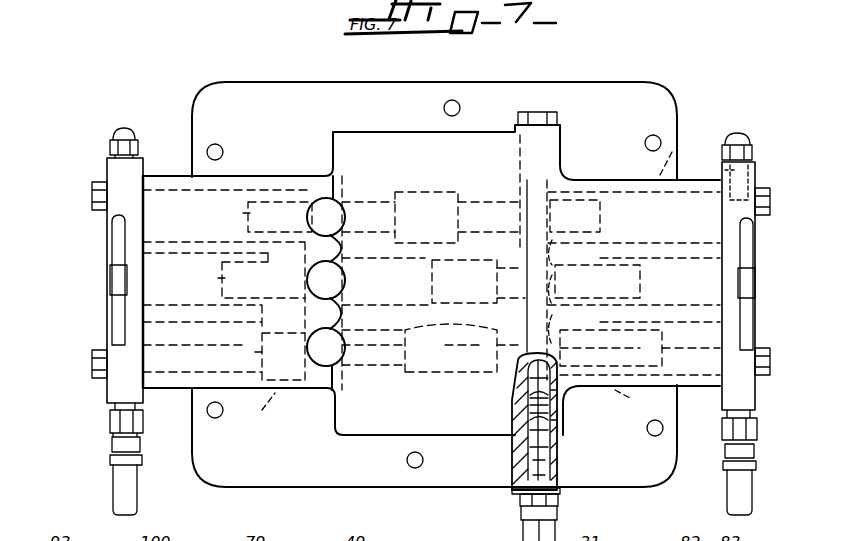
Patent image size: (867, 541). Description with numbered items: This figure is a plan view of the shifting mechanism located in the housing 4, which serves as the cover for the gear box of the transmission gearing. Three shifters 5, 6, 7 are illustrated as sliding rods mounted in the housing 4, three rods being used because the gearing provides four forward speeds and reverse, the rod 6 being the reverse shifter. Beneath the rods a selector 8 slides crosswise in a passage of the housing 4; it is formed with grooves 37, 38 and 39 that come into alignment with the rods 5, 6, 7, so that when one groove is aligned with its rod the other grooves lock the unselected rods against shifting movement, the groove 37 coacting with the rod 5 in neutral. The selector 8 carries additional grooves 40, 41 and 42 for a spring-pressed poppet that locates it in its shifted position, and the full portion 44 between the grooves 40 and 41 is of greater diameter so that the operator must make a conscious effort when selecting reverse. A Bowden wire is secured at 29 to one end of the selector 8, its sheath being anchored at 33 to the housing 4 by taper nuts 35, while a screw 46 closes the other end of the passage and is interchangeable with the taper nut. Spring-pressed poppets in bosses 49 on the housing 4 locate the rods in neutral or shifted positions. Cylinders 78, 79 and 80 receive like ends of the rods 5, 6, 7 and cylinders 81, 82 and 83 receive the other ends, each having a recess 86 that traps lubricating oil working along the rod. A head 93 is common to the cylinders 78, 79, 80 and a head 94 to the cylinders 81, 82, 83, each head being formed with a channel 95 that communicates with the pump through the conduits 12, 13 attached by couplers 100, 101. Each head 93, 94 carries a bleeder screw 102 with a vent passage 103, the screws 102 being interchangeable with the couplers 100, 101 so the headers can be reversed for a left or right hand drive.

The housing 4 is at (447, 451).
The shifter 5 is at (222, 278).
The shifter 6 is at (262, 352).
The shifter 7 is at (248, 213).
The selector 8 is at (108, 346).
The conduit 12 is at (118, 487).
The conduit 13 is at (748, 495).
The Bowden wire connection 29 is at (560, 452).
The cable anchorage 33 is at (520, 502).
The taper nuts 35 is at (560, 510).
The groove 37 is at (574, 290).
The groove 38 is at (552, 345).
The groove 39 is at (552, 236).
The groove 40 is at (520, 395).
The groove 41 is at (516, 418).
The groove 42 is at (570, 392).
The full portion 44 is at (565, 420).
The screw 46 is at (522, 118).
The bosses 49 is at (385, 262).
The cylinder 78 is at (155, 288).
The cylinder 79 is at (130, 328).
The cylinder 80 is at (110, 240).
The cylinder 81 is at (710, 270).
The cylinder 82 is at (695, 340).
The cylinder 83 is at (672, 152).
The recess 86 is at (441, 410).
The head 93 is at (112, 224).
The head 94 is at (757, 230).
The channel 95 is at (760, 368).
The coupler 100 is at (110, 420).
The coupler 101 is at (758, 448).
The bleeder screw 102 is at (110, 147).
The vent passage 103 is at (725, 170).